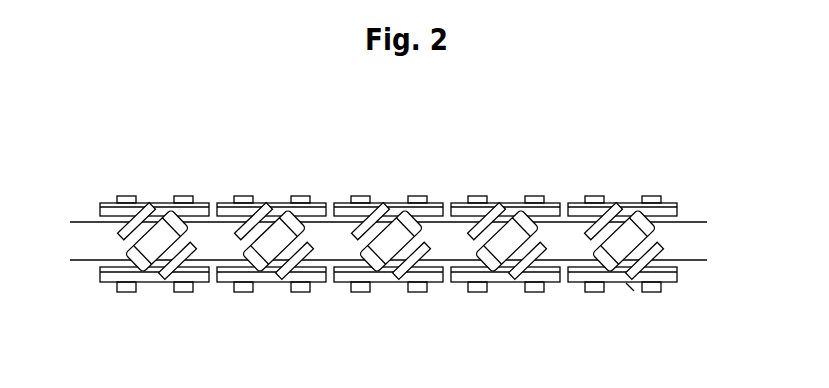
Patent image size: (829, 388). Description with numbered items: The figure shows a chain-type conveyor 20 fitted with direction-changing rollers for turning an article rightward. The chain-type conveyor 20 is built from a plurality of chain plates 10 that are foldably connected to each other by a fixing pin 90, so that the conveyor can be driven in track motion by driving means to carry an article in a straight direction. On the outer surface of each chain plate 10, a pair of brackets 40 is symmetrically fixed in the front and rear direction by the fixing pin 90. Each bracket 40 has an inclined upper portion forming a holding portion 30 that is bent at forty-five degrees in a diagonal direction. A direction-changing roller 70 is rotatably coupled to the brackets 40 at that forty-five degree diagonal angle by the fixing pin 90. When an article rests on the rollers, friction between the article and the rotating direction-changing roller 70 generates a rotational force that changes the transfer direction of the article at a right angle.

The chain plate 10 is at (102, 206).
The chain-type conveyor 20 is at (404, 231).
The holding portion 30 is at (668, 240).
The bracket 40 is at (632, 289).
The direction-changing roller 70 is at (642, 221).
The fixing pin 90 is at (127, 196).